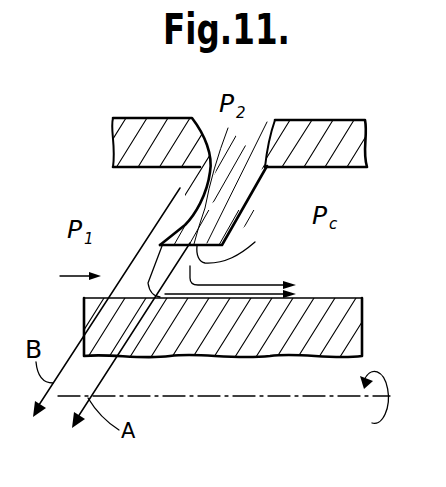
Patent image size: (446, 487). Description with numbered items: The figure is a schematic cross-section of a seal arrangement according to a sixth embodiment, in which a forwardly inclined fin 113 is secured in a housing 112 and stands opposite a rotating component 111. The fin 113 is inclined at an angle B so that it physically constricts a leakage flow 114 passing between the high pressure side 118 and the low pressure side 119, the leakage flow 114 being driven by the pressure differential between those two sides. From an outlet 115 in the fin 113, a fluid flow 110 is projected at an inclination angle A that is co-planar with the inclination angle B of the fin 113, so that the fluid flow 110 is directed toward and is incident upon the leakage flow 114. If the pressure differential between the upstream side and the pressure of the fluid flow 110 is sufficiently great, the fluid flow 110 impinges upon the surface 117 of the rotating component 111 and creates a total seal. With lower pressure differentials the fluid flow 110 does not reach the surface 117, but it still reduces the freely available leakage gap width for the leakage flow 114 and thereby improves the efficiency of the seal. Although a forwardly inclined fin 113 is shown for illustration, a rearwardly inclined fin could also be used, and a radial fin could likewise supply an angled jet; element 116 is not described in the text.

The fluid flow 110 is at (263, 290).
The rotating component 111 is at (343, 328).
The housing 112 is at (298, 135).
The forwardly inclined fin 113 is at (235, 204).
The leakage flow 114 is at (70, 277).
The outlet 115 is at (245, 243).
The nozzle left wall / left body 116 is at (233, 142).
The surface 117 is at (340, 297).
The high pressure side 118 is at (122, 200).
The low pressure side 119 is at (397, 207).